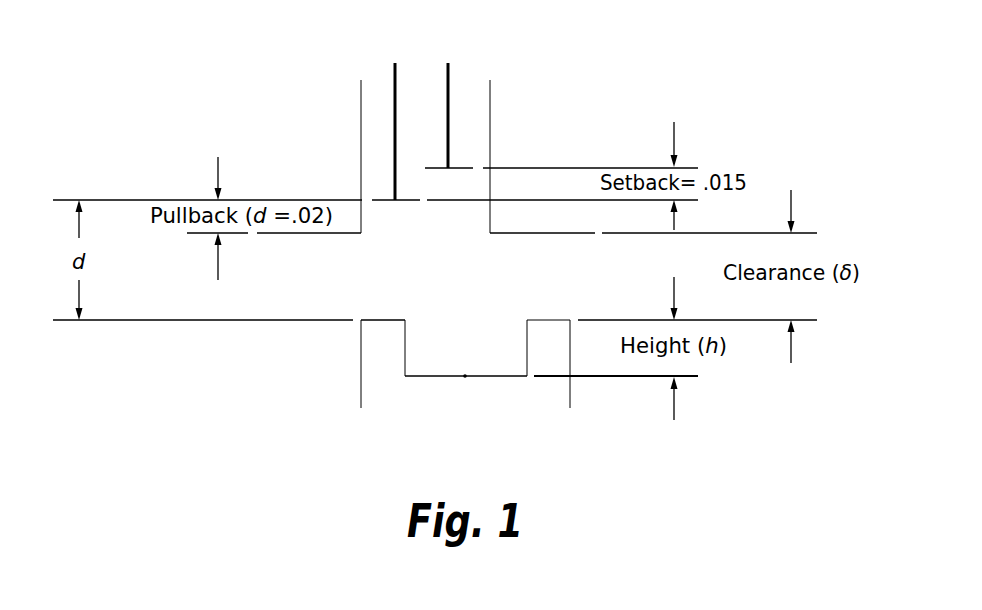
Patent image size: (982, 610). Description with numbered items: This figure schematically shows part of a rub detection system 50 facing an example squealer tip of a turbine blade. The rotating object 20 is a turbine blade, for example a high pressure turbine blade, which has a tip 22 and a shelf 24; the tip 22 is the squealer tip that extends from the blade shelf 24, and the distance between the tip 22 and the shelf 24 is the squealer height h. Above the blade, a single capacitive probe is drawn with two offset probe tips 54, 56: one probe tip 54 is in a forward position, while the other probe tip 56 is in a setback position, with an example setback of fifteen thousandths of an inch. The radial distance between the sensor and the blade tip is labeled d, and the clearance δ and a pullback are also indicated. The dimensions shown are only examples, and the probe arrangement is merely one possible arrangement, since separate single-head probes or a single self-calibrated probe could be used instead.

The rub detection system 50 is at (643, 68).
The probe tip 54 is at (376, 186).
The probe tip 56 is at (470, 156).
The rotating object 20 is at (580, 405).
The tip 22 is at (378, 320).
The shelf 24 is at (457, 378).